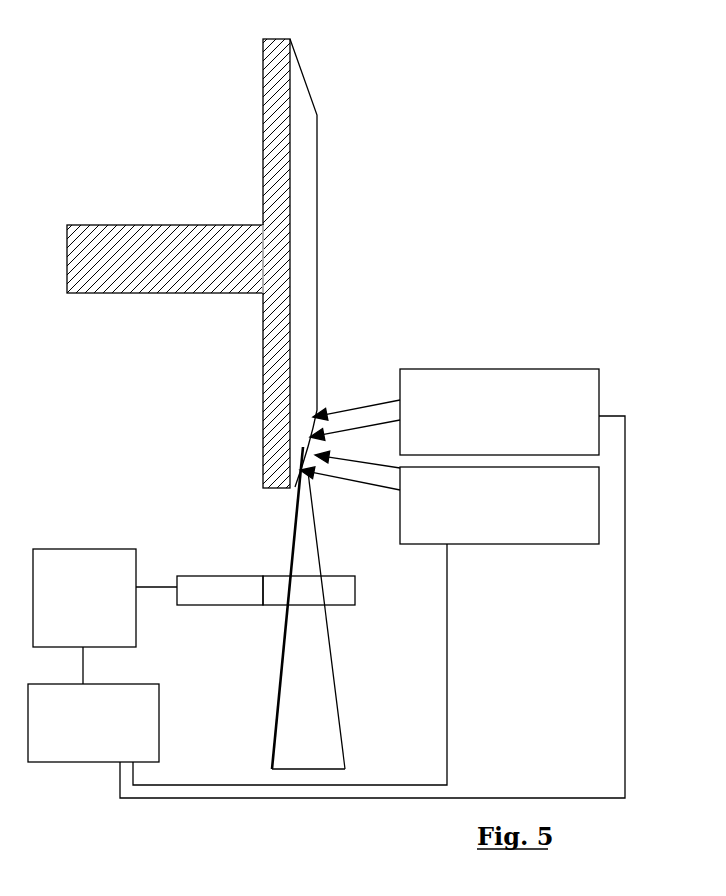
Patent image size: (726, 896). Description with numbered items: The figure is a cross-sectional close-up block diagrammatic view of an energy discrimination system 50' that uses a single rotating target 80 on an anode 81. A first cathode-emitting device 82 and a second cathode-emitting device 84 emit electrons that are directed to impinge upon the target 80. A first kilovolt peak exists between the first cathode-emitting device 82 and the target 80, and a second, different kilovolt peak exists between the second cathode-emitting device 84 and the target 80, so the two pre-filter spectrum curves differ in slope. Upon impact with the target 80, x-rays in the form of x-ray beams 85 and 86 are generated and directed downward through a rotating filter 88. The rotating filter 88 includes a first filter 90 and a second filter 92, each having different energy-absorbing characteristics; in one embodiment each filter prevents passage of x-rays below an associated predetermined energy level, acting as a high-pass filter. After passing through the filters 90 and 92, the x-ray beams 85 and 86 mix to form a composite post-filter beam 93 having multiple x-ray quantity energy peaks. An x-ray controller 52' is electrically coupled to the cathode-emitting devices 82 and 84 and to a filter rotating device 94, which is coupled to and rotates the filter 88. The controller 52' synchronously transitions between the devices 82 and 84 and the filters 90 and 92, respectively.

The energy discrimination system 50' is at (473, 143).
The rotating target 80 is at (305, 84).
The anode 81 is at (317, 167).
The first cathode-emitting device 82 is at (500, 369).
The second cathode-emitting device 84 is at (523, 544).
The x-ray beam 85 is at (317, 523).
The x-ray beam 86 is at (297, 518).
The rotating filter 88 is at (288, 577).
The first filter 90 is at (183, 575).
The second filter 92 is at (342, 575).
The post-filter beam 93 is at (321, 608).
The filter rotating device 94 is at (136, 632).
The x-ray controller 52' is at (115, 723).